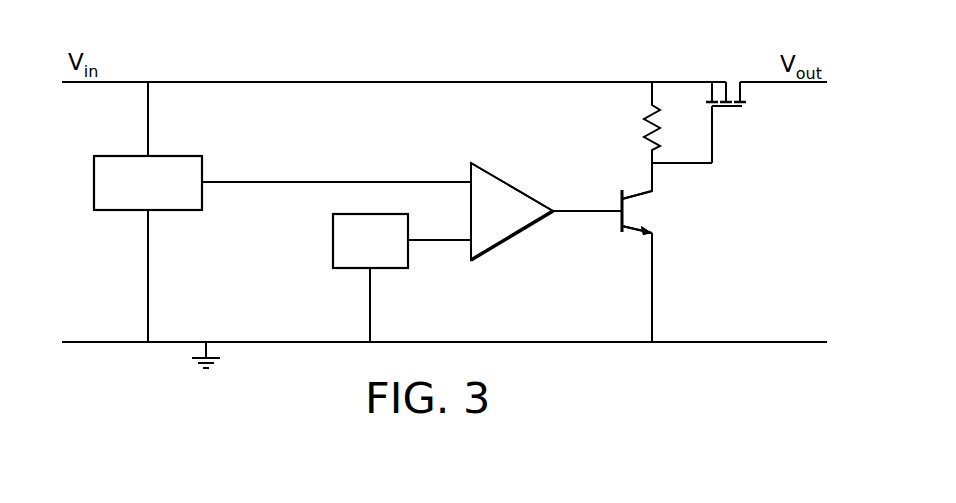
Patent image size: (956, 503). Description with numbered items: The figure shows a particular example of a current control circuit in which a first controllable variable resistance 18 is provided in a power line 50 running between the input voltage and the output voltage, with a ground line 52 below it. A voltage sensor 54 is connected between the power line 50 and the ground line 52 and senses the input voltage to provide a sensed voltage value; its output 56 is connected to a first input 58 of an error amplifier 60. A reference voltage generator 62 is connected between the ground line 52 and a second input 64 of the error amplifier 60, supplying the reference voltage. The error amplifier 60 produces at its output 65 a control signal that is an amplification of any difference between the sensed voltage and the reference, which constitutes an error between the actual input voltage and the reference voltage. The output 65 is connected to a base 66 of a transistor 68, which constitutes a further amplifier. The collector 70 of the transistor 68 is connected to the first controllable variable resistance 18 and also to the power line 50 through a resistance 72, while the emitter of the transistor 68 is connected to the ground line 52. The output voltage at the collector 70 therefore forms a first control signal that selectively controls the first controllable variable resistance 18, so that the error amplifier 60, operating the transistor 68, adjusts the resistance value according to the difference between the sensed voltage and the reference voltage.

The first controllable variable resistance 18 is at (724, 82).
The power line 50 is at (443, 82).
The ground line 52 is at (567, 342).
The voltage sensor 54 is at (94, 167).
The output of the voltage sensor 56 is at (205, 178).
The first input of the error amplifier 58 is at (470, 180).
The error amplifier 60 is at (514, 186).
The reference voltage generator 62 is at (333, 226).
The second input of the error amplifier 64 is at (471, 246).
The output of the error amplifier 65 is at (554, 214).
The base 66 is at (620, 194).
The transistor 68 is at (645, 205).
The collector 70 is at (635, 190).
The resistance 72 is at (646, 108).